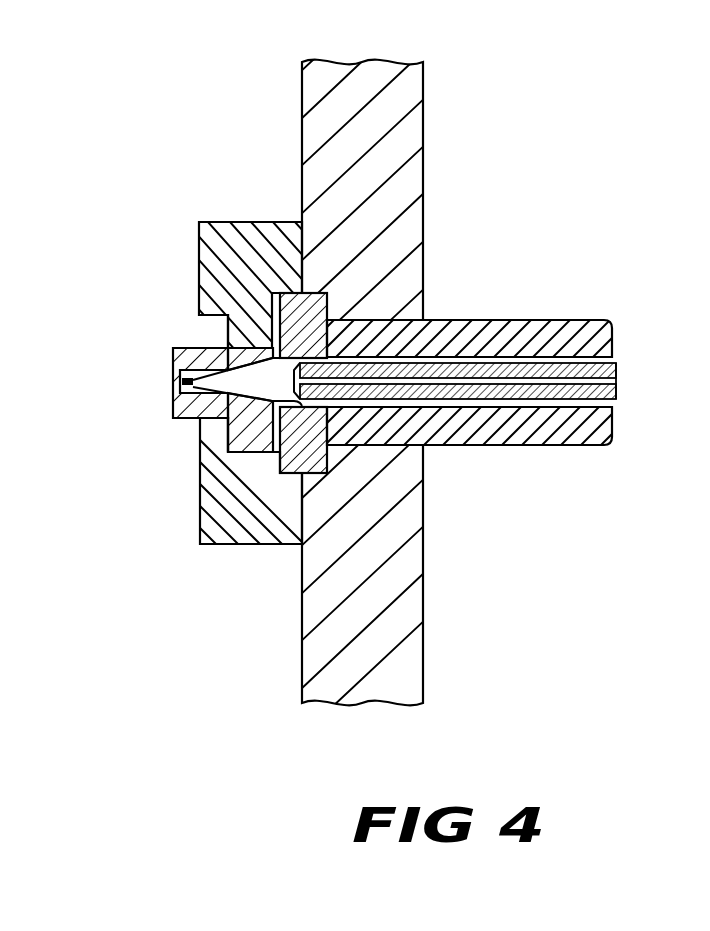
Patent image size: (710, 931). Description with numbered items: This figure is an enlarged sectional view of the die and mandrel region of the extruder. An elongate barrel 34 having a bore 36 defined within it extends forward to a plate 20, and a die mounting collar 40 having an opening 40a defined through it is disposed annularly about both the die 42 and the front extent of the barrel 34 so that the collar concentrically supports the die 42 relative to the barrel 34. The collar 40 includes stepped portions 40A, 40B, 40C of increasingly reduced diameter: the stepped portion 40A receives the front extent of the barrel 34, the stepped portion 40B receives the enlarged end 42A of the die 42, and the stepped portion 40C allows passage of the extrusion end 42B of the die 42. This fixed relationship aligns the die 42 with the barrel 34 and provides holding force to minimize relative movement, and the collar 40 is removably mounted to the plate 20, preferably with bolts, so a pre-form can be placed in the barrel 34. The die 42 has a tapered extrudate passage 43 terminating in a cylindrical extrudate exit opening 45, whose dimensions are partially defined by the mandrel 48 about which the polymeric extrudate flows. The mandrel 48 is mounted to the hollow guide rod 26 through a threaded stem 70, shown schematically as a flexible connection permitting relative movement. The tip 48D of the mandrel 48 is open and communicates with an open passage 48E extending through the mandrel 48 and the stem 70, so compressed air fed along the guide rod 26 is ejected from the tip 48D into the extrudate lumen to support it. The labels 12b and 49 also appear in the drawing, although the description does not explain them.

The plate 20 is at (407, 648).
The inner surface side of wall 12b is at (291, 682).
The guide rod 26 is at (553, 371).
The barrel 34 is at (396, 320).
The bore 36 is at (613, 364).
The die mounting collar 40 is at (205, 387).
The stepped portion 40A is at (277, 253).
The stepped portion 40B is at (237, 287).
The stepped portion 40C is at (213, 307).
The opening 40a is at (227, 323).
The die 42 is at (196, 484).
The enlarged end 42A is at (207, 438).
The extrusion end 42B is at (187, 347).
The tapered extrudate passage 43 is at (207, 428).
The extrudate exit opening 45 is at (182, 384).
The mandrel 48 is at (318, 296).
The tip 48D is at (312, 345).
The open passage 48E is at (176, 392).
The fluid passage 49 is at (320, 372).
The threaded stem 70 is at (308, 362).